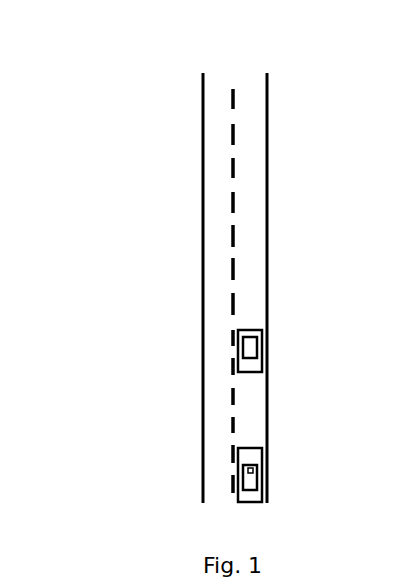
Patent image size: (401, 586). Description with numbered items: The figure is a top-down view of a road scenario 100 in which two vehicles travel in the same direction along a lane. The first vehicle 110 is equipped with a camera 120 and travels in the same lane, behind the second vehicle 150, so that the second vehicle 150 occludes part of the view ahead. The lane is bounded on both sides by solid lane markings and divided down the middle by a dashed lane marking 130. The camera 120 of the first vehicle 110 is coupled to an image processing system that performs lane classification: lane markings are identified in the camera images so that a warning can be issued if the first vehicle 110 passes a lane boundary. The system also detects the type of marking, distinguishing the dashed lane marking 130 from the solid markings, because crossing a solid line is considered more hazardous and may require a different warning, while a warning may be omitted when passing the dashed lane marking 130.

The road scenario 100 is at (57, 87).
The first vehicle 110 is at (259, 489).
The camera 120 is at (257, 465).
The dashed lane marking 130 is at (232, 87).
The second vehicle 150 is at (252, 344).